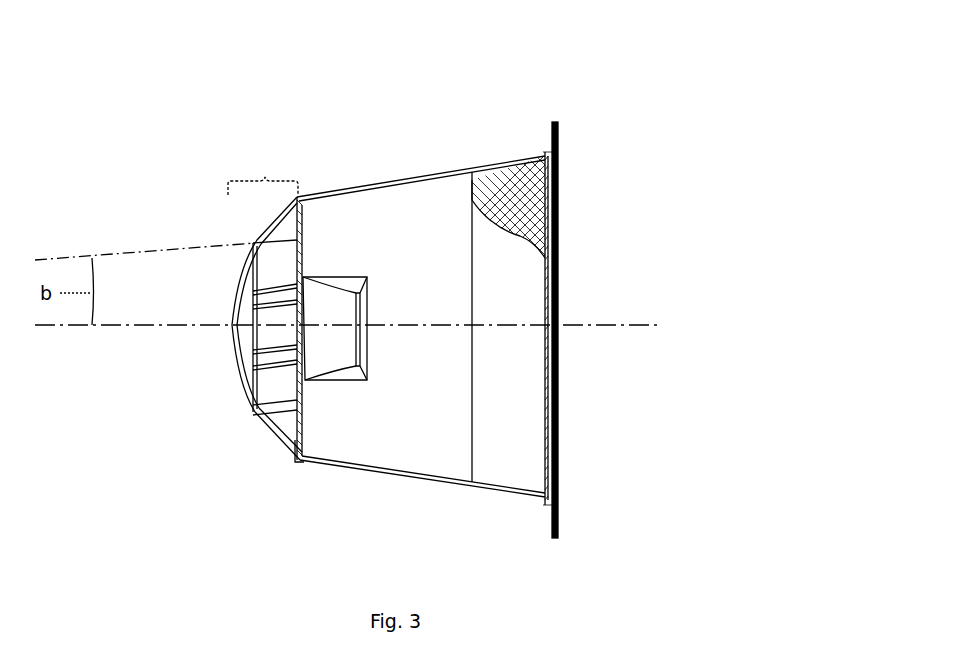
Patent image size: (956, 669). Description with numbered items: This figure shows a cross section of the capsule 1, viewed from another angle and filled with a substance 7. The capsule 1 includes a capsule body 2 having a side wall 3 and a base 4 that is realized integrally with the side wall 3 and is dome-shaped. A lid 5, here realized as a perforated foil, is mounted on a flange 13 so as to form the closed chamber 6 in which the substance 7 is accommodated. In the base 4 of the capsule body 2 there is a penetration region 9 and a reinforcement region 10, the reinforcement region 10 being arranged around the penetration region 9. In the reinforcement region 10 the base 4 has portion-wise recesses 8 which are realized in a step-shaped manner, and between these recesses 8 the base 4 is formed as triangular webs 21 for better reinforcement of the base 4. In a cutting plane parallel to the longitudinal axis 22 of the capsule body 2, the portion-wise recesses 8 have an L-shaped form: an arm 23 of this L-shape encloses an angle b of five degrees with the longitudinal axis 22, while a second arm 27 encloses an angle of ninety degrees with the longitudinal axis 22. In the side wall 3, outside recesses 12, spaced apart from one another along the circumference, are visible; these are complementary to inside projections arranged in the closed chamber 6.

The capsule 1 is at (430, 72).
The capsule body 2 is at (382, 486).
The side wall 3 is at (435, 478).
The base 4 is at (270, 170).
The lid 5 is at (559, 393).
The closed chamber 6 is at (493, 400).
The substance 7 is at (476, 178).
The portion-wise recesses 8 is at (272, 348).
The penetration region 9 is at (235, 383).
The reinforcement region 10 is at (271, 470).
The outside recesses 12 is at (337, 322).
The flange 13 is at (552, 133).
The triangular webs 21 is at (288, 365).
The longitudinal axis 22 is at (556, 325).
The arm 23 is at (263, 422).
The second arm 27 is at (303, 460).